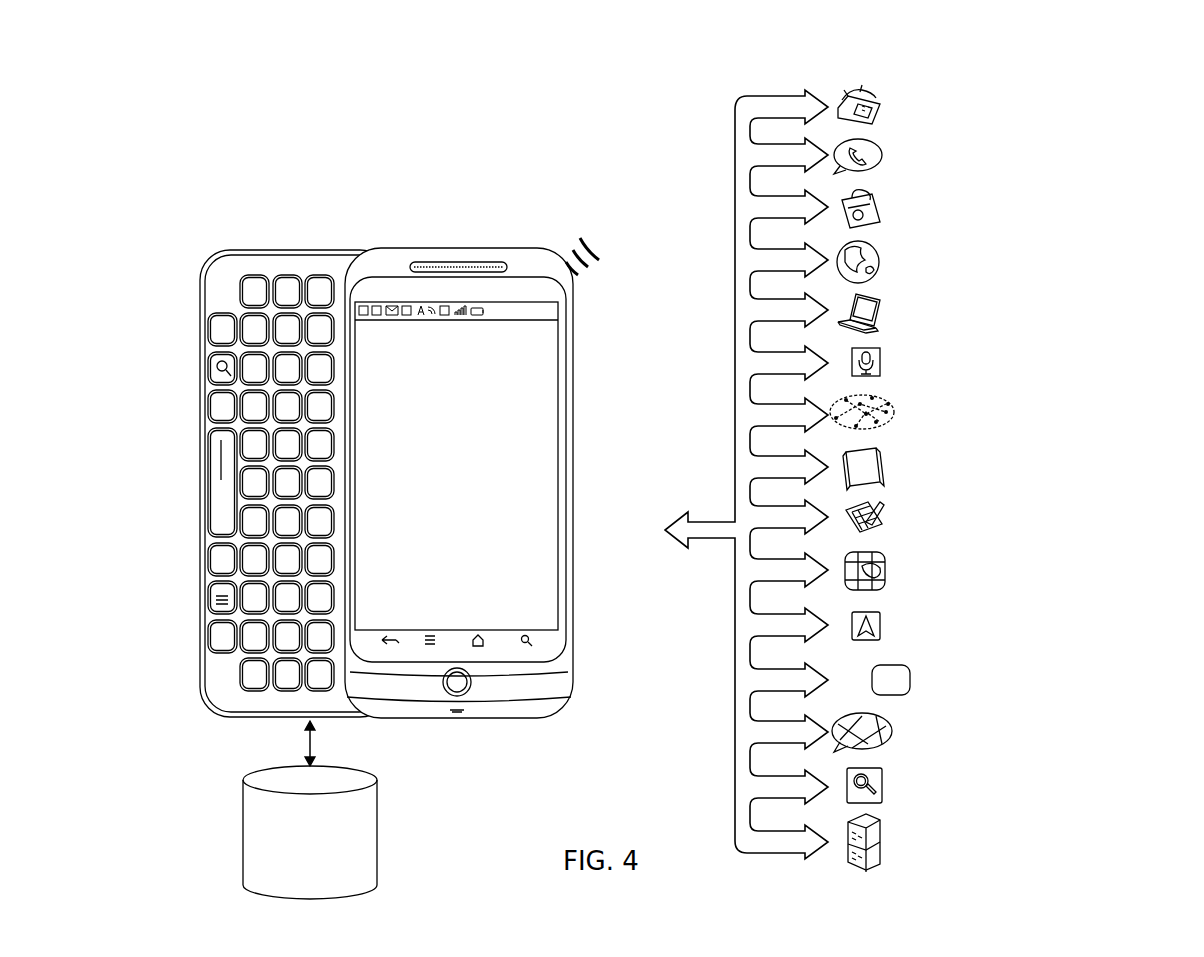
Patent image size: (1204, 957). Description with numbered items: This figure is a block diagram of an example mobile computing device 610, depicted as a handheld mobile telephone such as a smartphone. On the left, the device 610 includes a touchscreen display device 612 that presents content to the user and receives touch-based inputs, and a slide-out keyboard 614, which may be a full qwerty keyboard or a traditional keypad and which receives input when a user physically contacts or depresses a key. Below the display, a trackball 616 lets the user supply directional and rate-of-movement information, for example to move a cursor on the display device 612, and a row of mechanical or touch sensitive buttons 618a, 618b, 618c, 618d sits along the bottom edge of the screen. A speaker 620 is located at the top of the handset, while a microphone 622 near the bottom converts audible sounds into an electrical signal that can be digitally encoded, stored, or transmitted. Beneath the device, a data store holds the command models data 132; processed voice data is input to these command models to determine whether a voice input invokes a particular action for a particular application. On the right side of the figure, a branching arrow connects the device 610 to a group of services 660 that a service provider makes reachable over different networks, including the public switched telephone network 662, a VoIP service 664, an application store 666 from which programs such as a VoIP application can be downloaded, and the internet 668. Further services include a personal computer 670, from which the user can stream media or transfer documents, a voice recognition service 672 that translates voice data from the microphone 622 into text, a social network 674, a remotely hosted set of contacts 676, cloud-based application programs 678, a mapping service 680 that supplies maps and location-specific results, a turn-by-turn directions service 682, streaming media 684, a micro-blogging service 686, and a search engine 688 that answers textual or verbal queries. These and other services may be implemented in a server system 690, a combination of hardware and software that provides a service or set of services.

The mobile computing device 610 is at (508, 196).
The touchscreen display device 612 is at (558, 475).
The keyboard 614 is at (310, 250).
The trackball 616 is at (472, 681).
The button 618a is at (389, 636).
The button 618b is at (430, 636).
The button 618c is at (478, 636).
The button 618d is at (528, 636).
The speaker 620 is at (463, 262).
The microphone 622 is at (454, 716).
The command models data 132 is at (326, 869).
The services 660 is at (1152, 88).
The PSTN 662 is at (879, 110).
The VoIP service 664 is at (879, 153).
The application store 666 is at (879, 203).
The internet 668 is at (879, 263).
The personal computer 670 is at (879, 303).
The voice recognition service 672 is at (879, 355).
The social network 674 is at (879, 401).
The contacts 676 is at (879, 465).
The cloud-based application programs 678 is at (879, 517).
The mapping service 680 is at (879, 560).
The turn-by-turn directions service 682 is at (879, 617).
The streaming media 684 is at (879, 667).
The micro-blogging service 686 is at (879, 723).
The search engine 688 is at (879, 775).
The server system 690 is at (879, 830).